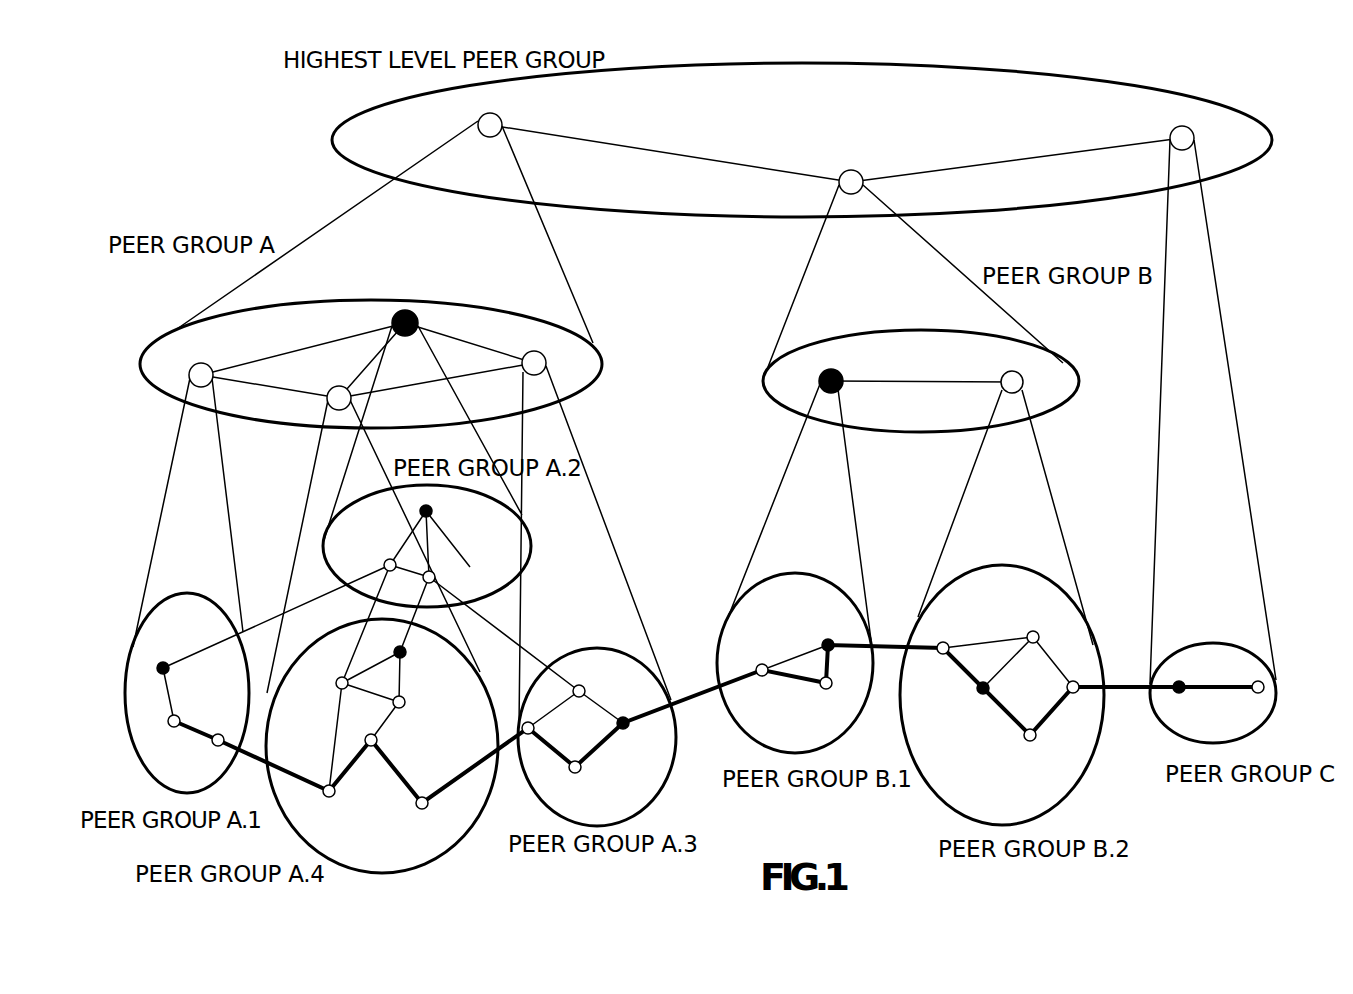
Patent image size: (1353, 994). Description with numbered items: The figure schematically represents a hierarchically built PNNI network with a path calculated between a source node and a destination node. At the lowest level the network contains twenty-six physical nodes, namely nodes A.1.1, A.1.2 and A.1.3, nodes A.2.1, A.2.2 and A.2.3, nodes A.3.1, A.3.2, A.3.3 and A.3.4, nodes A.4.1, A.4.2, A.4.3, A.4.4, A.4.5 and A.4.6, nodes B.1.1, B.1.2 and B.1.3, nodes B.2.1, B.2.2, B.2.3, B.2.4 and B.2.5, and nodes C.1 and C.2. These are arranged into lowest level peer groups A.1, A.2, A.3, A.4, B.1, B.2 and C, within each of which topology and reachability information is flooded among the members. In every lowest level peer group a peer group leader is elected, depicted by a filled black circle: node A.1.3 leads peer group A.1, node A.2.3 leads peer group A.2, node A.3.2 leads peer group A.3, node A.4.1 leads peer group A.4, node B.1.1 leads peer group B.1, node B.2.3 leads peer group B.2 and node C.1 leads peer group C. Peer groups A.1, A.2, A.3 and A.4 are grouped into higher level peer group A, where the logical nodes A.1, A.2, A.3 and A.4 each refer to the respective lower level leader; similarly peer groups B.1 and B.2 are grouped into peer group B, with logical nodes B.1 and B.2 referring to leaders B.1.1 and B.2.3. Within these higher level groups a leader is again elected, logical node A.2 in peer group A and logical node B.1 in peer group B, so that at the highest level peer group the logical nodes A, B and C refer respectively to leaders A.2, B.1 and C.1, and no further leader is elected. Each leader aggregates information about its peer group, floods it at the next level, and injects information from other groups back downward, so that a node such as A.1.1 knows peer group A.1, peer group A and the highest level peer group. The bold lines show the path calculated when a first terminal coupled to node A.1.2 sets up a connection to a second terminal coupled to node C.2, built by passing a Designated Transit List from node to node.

The logical node A is at (478, 120).
The logical node B is at (840, 175).
The logical node C is at (1170, 132).
The peer group A.1 is at (198, 363).
The peer group A.2 is at (378, 322).
The peer group A.3 is at (523, 348).
The peer group A.4 is at (337, 386).
The peer group B.1 is at (850, 375).
The peer group B.2 is at (992, 375).
The node A.1.1 is at (195, 756).
The node A.1.2 is at (201, 710).
The node A.1.3 is at (174, 651).
The node A.2.1 is at (460, 578).
The node A.2.2 is at (363, 556).
The node A.2.3 is at (455, 514).
The node A.3.1 is at (608, 681).
The node A.3.2 is at (643, 740).
The node A.3.3 is at (581, 784).
The node A.3.4 is at (561, 730).
The node A.4.1 is at (428, 661).
The node A.4.2 is at (316, 692).
The node A.4.3 is at (429, 709).
The node A.4.4 is at (402, 745).
The node A.4.5 is at (333, 807).
The node A.4.6 is at (431, 820).
The node B.1.1 is at (826, 632).
The node B.1.2 is at (756, 657).
The node B.1.3 is at (826, 697).
The node B.2.1 is at (1036, 627).
The node B.2.2 is at (954, 635).
The node B.2.3 is at (954, 697).
The node B.2.4 is at (1037, 753).
The node B.2.5 is at (1044, 690).
The node C.1 is at (1176, 702).
The node C.2 is at (1252, 702).